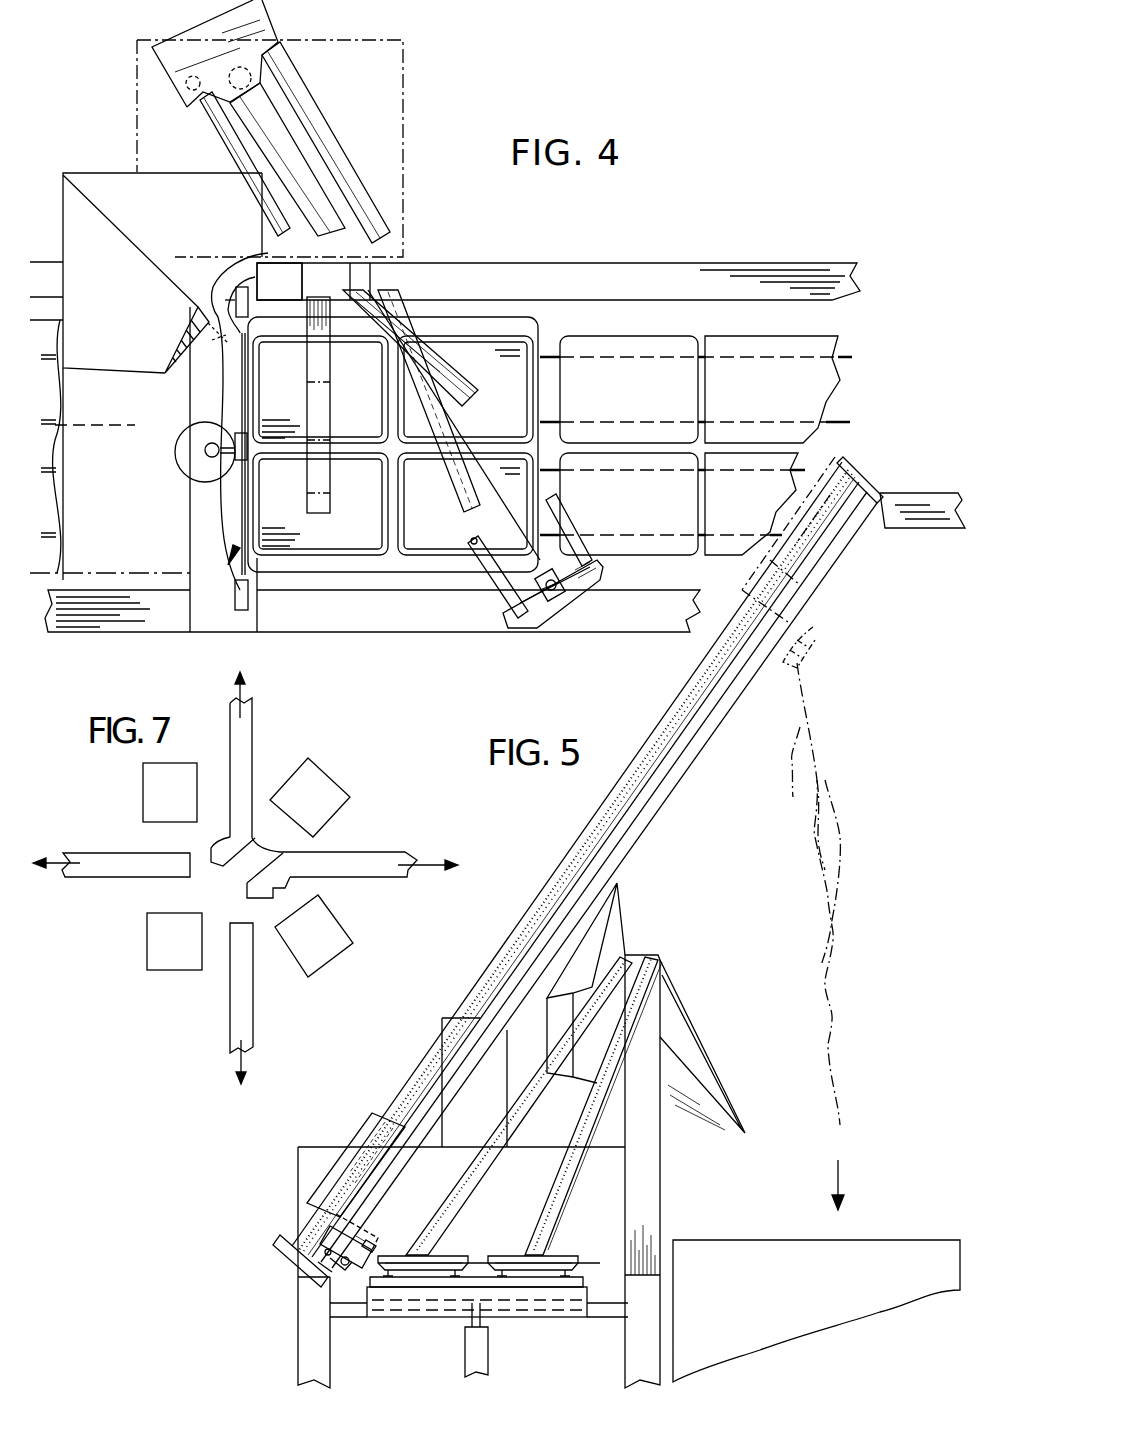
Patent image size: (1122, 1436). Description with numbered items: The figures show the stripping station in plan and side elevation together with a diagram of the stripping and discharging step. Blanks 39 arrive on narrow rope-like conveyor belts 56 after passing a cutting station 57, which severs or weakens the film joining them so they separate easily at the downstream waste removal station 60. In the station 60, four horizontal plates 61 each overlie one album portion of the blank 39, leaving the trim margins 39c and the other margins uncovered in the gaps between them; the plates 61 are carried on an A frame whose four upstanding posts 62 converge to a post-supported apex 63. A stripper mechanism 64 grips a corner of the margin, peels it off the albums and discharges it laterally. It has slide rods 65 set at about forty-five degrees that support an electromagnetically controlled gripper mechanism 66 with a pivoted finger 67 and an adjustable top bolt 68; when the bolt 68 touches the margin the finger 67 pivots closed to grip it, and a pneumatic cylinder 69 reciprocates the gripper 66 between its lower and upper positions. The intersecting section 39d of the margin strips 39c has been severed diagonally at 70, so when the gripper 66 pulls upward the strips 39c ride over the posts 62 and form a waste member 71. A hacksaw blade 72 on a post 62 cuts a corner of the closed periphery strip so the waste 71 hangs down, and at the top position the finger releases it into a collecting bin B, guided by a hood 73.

In FIG. 5, the blank 39 is at (588, 1258).
In FIG. 7, the trim margins 39c is at (388, 858).
In FIG. 7, the intersecting section 39d is at (222, 858).
In FIG. 4, the conveyor belts 56 is at (547, 417).
In FIG. 5, the conveyor belts 56 is at (457, 1273).
In FIG. 4, the cutting station 57 is at (235, 553).
In FIG. 5, the waste removal station 60 is at (619, 906).
In FIG. 4, the horizontal plates 61 is at (372, 431).
In FIG. 5, the horizontal plates 61 is at (457, 1255).
In FIG. 7, the posts 62 is at (182, 806).
In FIG. 5, the posts 62 is at (557, 1170).
In FIG. 4, the apex 63 is at (330, 278).
In FIG. 5, the apex 63 is at (658, 958).
In FIG. 5, the stripper mechanism 64 is at (637, 753).
In FIG. 4, the slide rods 65 is at (408, 340).
In FIG. 5, the slide rods 65 is at (672, 780).
In FIG. 4, the gripper mechanism 66 is at (533, 590).
In FIG. 5, the gripper mechanism 66 is at (824, 597).
In FIG. 5, the pivoted finger 67 is at (352, 1265).
In FIG. 5, the adjustable top bolt 68 is at (377, 1240).
In FIG. 5, the pneumatic cylinder 69 is at (372, 1112).
In FIG. 7, the diagonal severing 70 is at (268, 828).
In FIG. 5, the waste member 71 is at (836, 849).
In FIG. 4, the hacksaw blade 72 is at (363, 305).
In FIG. 4, the hood 73 is at (80, 207).
In FIG. 5, the hood 73 is at (627, 917).
In FIG. 5, the collecting bin B is at (708, 1240).